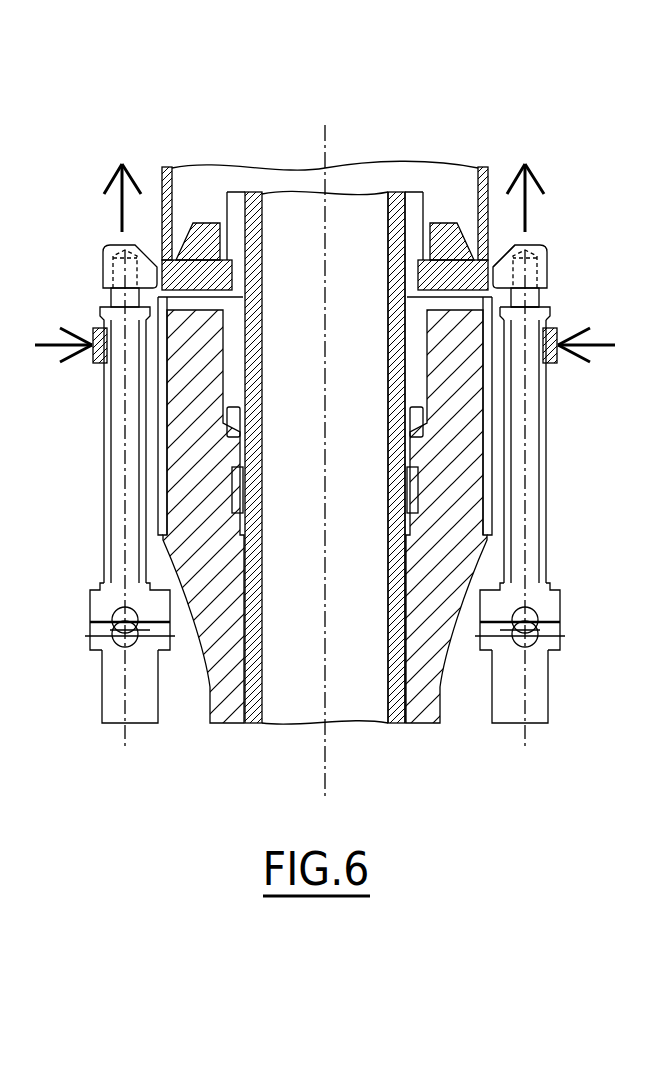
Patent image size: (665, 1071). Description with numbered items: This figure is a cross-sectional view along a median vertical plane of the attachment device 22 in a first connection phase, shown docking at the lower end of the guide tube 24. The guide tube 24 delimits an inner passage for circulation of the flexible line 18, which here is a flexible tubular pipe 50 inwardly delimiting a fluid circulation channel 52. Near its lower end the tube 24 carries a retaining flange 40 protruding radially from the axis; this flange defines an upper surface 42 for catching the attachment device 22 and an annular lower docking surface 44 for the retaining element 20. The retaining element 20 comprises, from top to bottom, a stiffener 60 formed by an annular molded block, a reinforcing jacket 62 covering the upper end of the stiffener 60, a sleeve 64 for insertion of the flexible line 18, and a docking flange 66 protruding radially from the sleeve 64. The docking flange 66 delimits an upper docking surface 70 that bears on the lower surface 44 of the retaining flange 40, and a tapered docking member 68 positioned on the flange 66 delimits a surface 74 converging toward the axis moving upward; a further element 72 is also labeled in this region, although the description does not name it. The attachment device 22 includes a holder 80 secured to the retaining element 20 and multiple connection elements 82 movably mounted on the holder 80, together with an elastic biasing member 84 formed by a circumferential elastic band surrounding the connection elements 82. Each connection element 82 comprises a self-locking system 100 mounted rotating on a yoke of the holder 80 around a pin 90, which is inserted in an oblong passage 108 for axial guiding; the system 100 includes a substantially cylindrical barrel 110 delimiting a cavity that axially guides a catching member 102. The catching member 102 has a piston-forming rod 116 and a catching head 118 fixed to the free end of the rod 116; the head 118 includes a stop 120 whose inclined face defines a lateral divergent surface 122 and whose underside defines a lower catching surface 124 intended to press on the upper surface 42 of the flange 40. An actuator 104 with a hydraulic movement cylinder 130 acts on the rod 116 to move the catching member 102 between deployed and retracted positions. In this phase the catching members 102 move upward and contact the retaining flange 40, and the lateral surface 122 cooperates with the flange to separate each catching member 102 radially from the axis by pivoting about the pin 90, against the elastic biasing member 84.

The flexible line 18 is at (275, 205).
The retaining element 20 is at (159, 758).
The attachment device 22 is at (548, 150).
The guide tube 24 is at (490, 258).
The retaining flange 40 is at (512, 240).
The upper surface 42 is at (500, 264).
The annular lower docking surface 44 is at (502, 265).
The flexible tubular pipe 50 is at (398, 732).
The fluid circulation channel 52 is at (352, 705).
The stiffener 60 is at (207, 690).
The reinforcing jacket 62 is at (168, 428).
The sleeve 64 is at (232, 370).
The docking flange 66 is at (129, 185).
The docking member 68 is at (440, 262).
The upper docking surface 70 is at (206, 270).
The bolt head 72 is at (131, 246).
The converging surface 74 is at (175, 272).
The holder 80 is at (88, 686).
The connection element 82 is at (103, 503).
The elastic biasing member 84 is at (557, 358).
The pin 90 is at (116, 645).
The self-locking system 100 is at (545, 518).
The catching member 102 is at (552, 285).
The actuator 104 is at (486, 682).
The oblong passage 108 is at (534, 620).
The barrel 110 is at (542, 437).
The piston-forming rod 116 is at (552, 310).
The catching head 118 is at (546, 290).
The stop 120 is at (548, 265).
The lateral divergent surface 122 is at (450, 252).
The lower catching surface 124 is at (490, 320).
The movement cylinder 130 is at (536, 690).